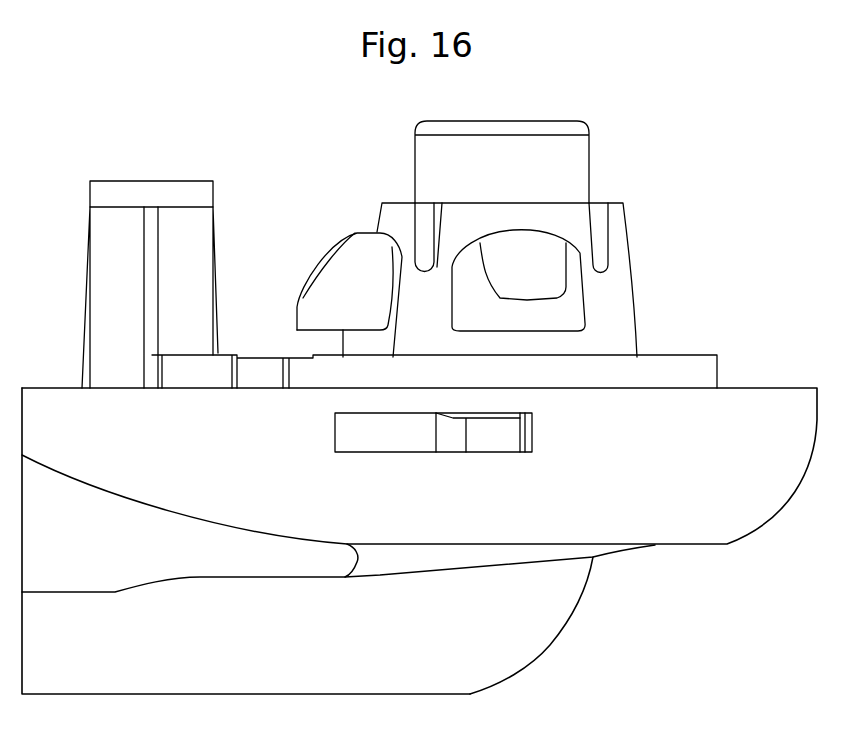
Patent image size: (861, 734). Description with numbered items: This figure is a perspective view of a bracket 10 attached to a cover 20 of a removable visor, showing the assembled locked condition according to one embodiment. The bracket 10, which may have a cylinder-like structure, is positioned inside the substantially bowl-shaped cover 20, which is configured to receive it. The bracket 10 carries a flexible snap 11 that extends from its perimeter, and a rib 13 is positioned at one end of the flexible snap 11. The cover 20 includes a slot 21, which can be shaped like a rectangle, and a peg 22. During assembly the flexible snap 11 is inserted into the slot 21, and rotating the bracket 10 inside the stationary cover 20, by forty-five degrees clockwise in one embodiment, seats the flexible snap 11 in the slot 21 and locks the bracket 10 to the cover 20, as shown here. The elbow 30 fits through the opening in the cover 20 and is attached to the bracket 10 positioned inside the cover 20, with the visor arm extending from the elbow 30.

The bracket 10 is at (602, 245).
The flexible snap 11 is at (424, 445).
The rib 13 is at (487, 445).
The cover 20 is at (688, 363).
The slot 21 is at (401, 461).
The peg 22 is at (97, 254).
The elbow 30 is at (545, 630).